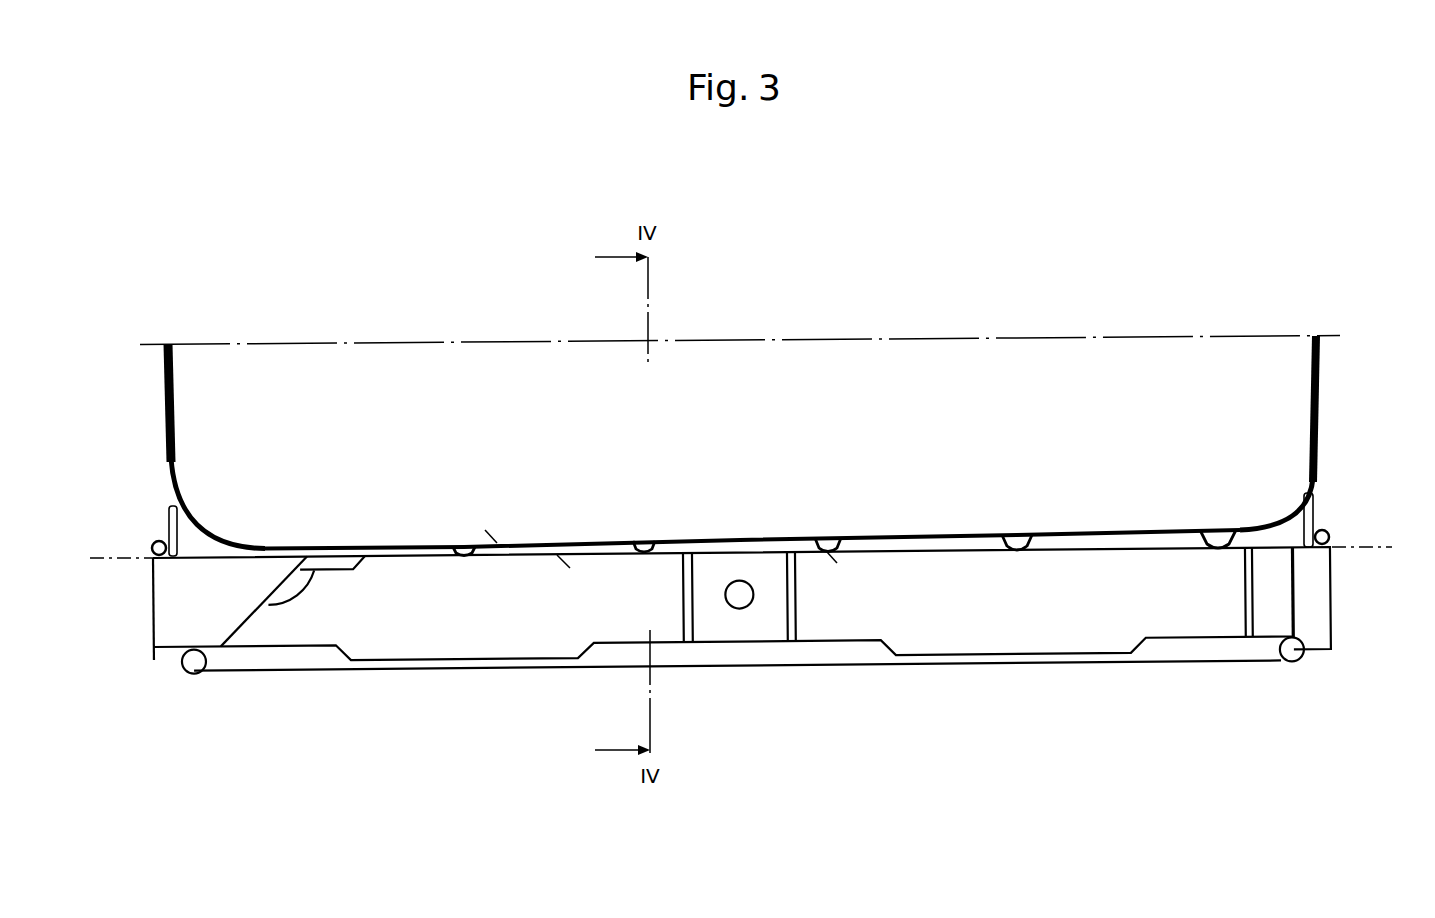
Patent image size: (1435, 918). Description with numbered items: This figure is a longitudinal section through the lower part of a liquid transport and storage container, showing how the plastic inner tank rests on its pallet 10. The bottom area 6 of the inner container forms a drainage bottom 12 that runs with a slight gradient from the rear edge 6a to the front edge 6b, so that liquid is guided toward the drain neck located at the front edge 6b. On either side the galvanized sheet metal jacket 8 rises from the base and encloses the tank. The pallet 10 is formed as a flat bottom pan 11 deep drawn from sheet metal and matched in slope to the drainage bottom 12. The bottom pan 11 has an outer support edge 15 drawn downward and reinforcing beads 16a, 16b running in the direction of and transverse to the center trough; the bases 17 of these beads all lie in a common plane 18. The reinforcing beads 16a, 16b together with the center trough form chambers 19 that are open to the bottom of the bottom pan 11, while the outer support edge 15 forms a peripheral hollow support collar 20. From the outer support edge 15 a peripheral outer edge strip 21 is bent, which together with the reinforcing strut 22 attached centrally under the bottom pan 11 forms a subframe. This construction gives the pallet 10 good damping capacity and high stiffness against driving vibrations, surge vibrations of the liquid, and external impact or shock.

The bottom area 6 is at (990, 513).
The rear edge 6a is at (1297, 510).
The front edge 6b is at (165, 525).
The jacket 8 is at (285, 368).
The pallet 10 is at (1345, 640).
The bottom pan 11 is at (210, 535).
The drainage bottom 12 is at (498, 543).
The outer support edge 15 is at (177, 508).
The reinforcing beads 16a is at (347, 553).
The reinforcing beads 16b is at (458, 556).
The bases of the beads 17 is at (552, 555).
The common plane 18 is at (739, 552).
The chambers 19 is at (937, 548).
The support collar 20 is at (1313, 503).
The outer edge strip 21 is at (1330, 533).
The reinforcing strut 22 is at (755, 540).